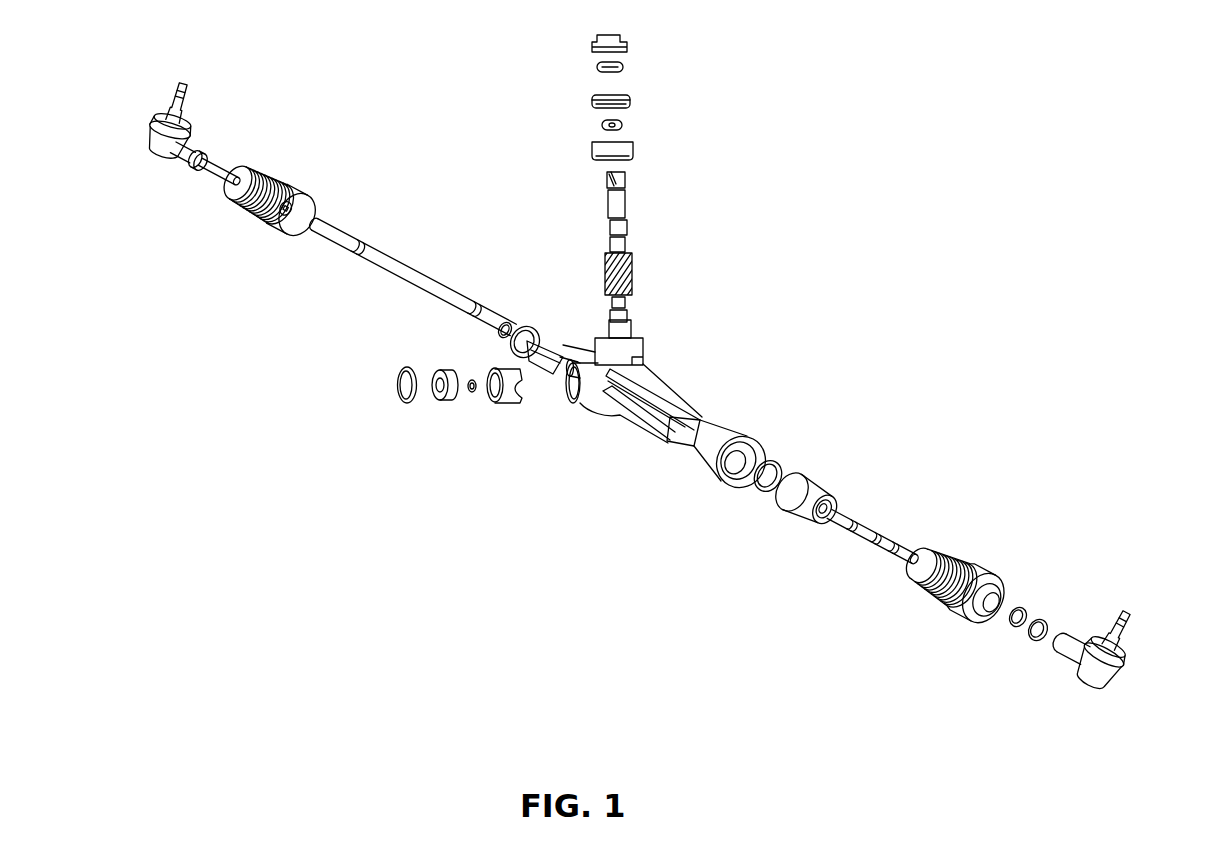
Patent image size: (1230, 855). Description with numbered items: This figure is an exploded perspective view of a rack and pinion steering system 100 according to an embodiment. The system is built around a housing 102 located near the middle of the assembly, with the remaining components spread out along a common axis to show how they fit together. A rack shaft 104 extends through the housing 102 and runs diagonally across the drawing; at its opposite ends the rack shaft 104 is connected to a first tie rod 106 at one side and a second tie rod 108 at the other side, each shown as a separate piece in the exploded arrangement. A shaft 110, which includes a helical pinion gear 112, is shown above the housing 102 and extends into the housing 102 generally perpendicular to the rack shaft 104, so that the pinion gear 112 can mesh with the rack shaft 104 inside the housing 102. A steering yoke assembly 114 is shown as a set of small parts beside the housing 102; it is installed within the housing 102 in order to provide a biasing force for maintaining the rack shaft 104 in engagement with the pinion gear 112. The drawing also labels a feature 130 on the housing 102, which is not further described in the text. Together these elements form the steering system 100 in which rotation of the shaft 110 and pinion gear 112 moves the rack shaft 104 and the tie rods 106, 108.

The rack and pinion steering system 100 is at (949, 156).
The housing 102 is at (688, 458).
The rack shaft 104 is at (385, 246).
The first tie rod 106 is at (1110, 673).
The second tie rod 108 is at (154, 142).
The shaft 110 is at (618, 207).
The helical pinion gear 112 is at (632, 267).
The steering yoke assembly 114 is at (505, 405).
The ribs 130 is at (640, 398).